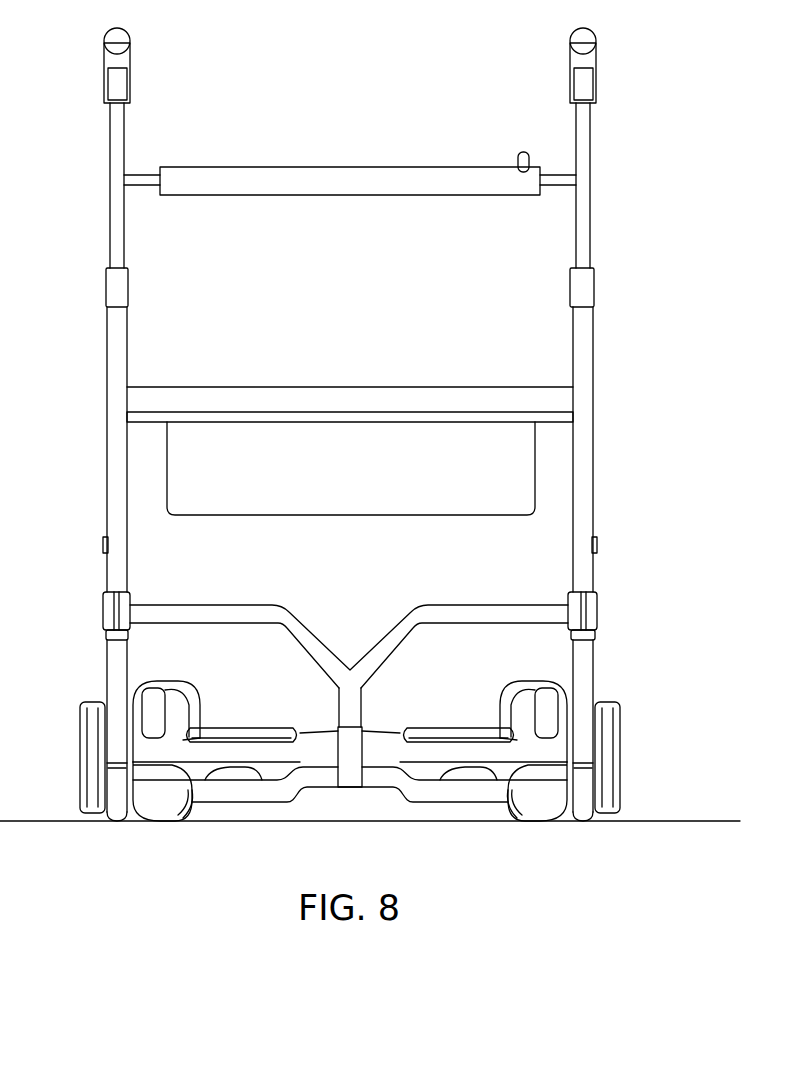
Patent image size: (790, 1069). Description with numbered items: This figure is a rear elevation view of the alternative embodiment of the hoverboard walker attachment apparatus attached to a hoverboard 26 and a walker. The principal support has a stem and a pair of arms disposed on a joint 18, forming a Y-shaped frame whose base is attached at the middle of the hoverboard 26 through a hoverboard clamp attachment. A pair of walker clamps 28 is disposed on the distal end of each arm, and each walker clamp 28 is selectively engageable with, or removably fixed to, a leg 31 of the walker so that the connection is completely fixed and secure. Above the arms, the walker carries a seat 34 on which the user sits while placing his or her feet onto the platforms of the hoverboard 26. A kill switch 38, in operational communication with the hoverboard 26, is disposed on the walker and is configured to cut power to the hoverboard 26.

The joint 18 is at (350, 680).
The hoverboard 26 is at (222, 790).
The walker clamp 28 is at (103, 617).
The leg 31 is at (587, 672).
The seat 34 is at (210, 395).
The kill switch 38 is at (521, 151).